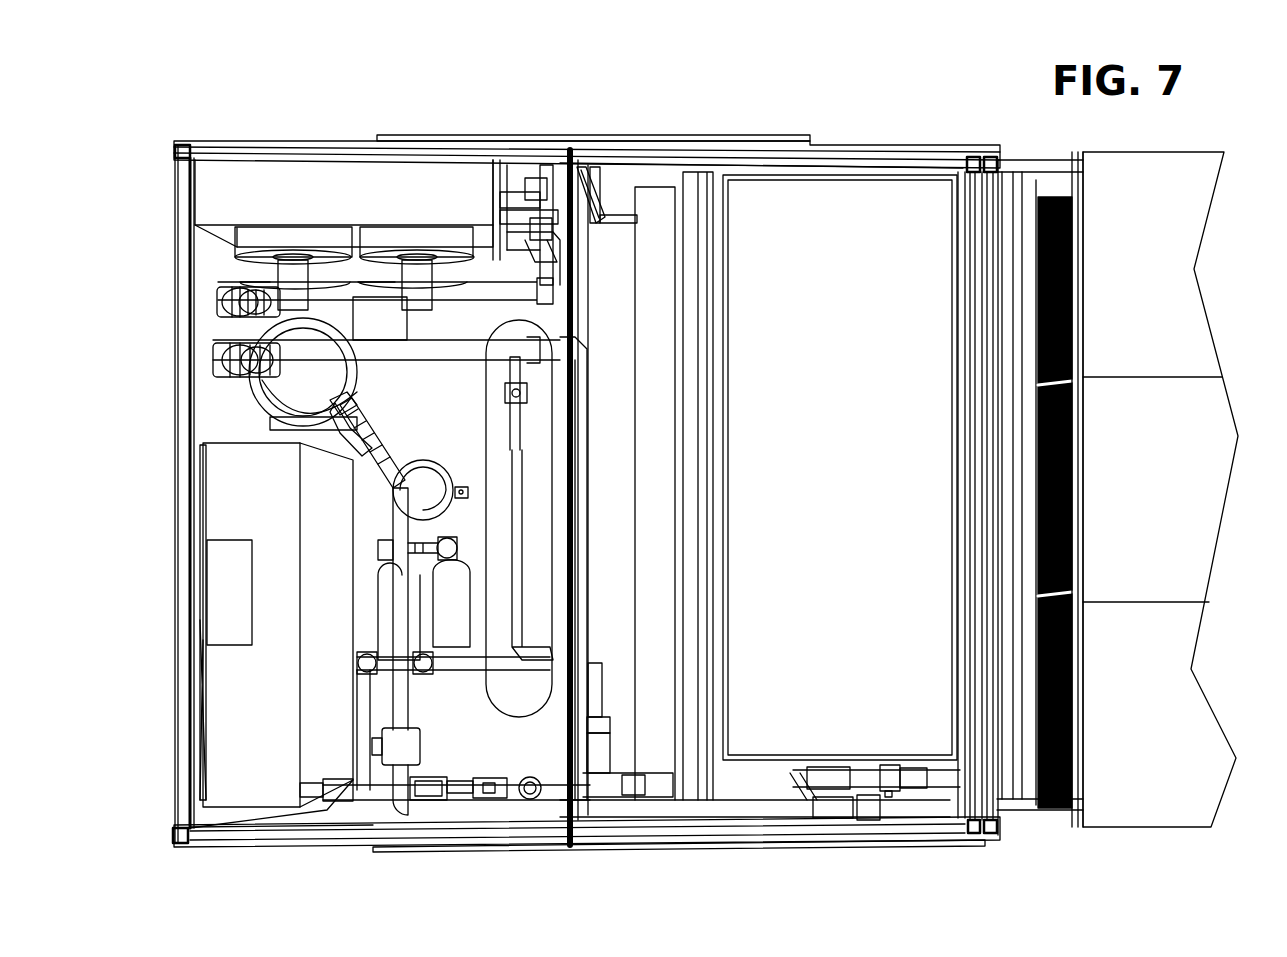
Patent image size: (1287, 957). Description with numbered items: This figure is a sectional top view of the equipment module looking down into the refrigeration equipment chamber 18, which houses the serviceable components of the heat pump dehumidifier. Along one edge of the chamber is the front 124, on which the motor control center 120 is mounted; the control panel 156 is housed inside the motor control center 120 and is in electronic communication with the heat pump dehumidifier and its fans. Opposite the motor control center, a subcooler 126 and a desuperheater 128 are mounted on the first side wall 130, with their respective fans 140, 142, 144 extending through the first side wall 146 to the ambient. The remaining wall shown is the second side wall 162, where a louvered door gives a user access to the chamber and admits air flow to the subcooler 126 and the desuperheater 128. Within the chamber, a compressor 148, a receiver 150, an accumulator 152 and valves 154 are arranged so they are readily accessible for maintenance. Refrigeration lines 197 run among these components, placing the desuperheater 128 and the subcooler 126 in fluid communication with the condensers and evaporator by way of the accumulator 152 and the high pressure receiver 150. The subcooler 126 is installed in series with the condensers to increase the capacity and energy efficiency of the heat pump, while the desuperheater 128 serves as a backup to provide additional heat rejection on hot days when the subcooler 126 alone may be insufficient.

The refrigeration equipment chamber 18 is at (440, 78).
The motor control center 120 is at (242, 723).
The front 124 is at (182, 607).
The subcooler 126 is at (520, 170).
The desuperheater 128 is at (252, 185).
The first side wall 130 is at (548, 160).
The fan 140 is at (323, 243).
The fan 142 is at (378, 317).
The fan 144 is at (415, 240).
The first side wall 146 is at (479, 180).
The compressor 148 is at (267, 388).
The receiver 150 is at (537, 443).
The accumulator 152 is at (418, 470).
The valves 154 is at (528, 790).
The control panel 156 is at (225, 565).
The second side wall 162 is at (333, 832).
The refrigeration lines 197 is at (630, 797).